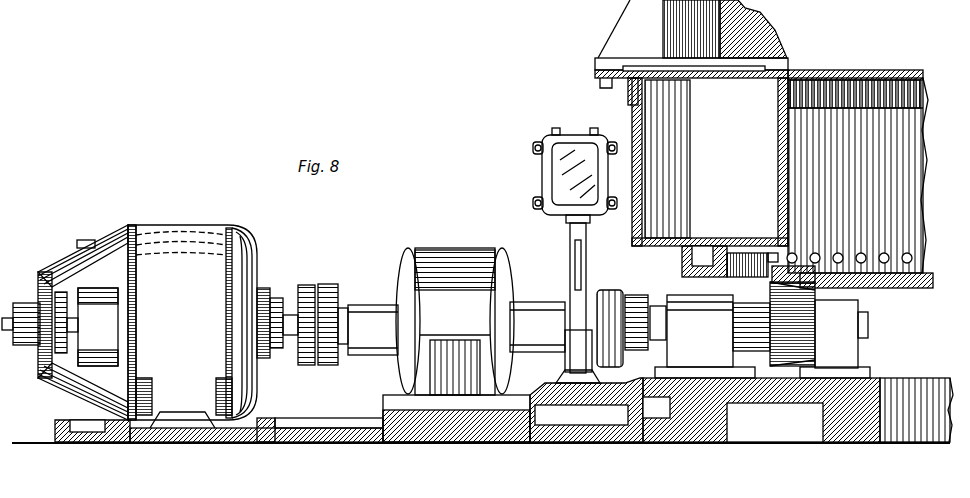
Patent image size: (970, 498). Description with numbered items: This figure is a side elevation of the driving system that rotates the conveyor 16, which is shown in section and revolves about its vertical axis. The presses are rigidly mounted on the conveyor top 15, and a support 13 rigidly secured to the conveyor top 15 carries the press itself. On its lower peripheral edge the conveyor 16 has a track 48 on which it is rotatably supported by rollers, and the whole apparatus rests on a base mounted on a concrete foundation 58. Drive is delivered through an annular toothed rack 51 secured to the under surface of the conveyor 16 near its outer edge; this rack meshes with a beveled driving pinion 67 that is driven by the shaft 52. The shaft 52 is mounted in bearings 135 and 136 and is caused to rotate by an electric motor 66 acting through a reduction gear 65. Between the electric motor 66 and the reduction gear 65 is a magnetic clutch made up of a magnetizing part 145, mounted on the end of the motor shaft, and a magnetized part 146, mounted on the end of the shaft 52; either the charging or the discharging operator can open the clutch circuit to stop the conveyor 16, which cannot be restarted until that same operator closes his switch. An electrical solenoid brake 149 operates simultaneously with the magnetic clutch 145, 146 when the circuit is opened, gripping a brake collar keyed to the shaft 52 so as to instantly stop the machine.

The support 13 is at (692, 29).
The conveyor top 15 is at (700, 78).
The conveyor 16 is at (783, 155).
The track 48 is at (682, 262).
The annular toothed rack 51 is at (772, 286).
The shaft 52 is at (657, 305).
The concrete foundation 58 is at (415, 428).
The reduction gear 65 is at (456, 321).
The electric motor 66 is at (150, 322).
The driving pinion 67 is at (798, 403).
The bearing 135 is at (712, 336).
The bearing 136 is at (835, 339).
The magnetizing part of magnetic clutch 145 is at (307, 290).
The magnetized part of magnetic clutch 146 is at (330, 288).
The electrical solenoid brake 149 is at (565, 222).